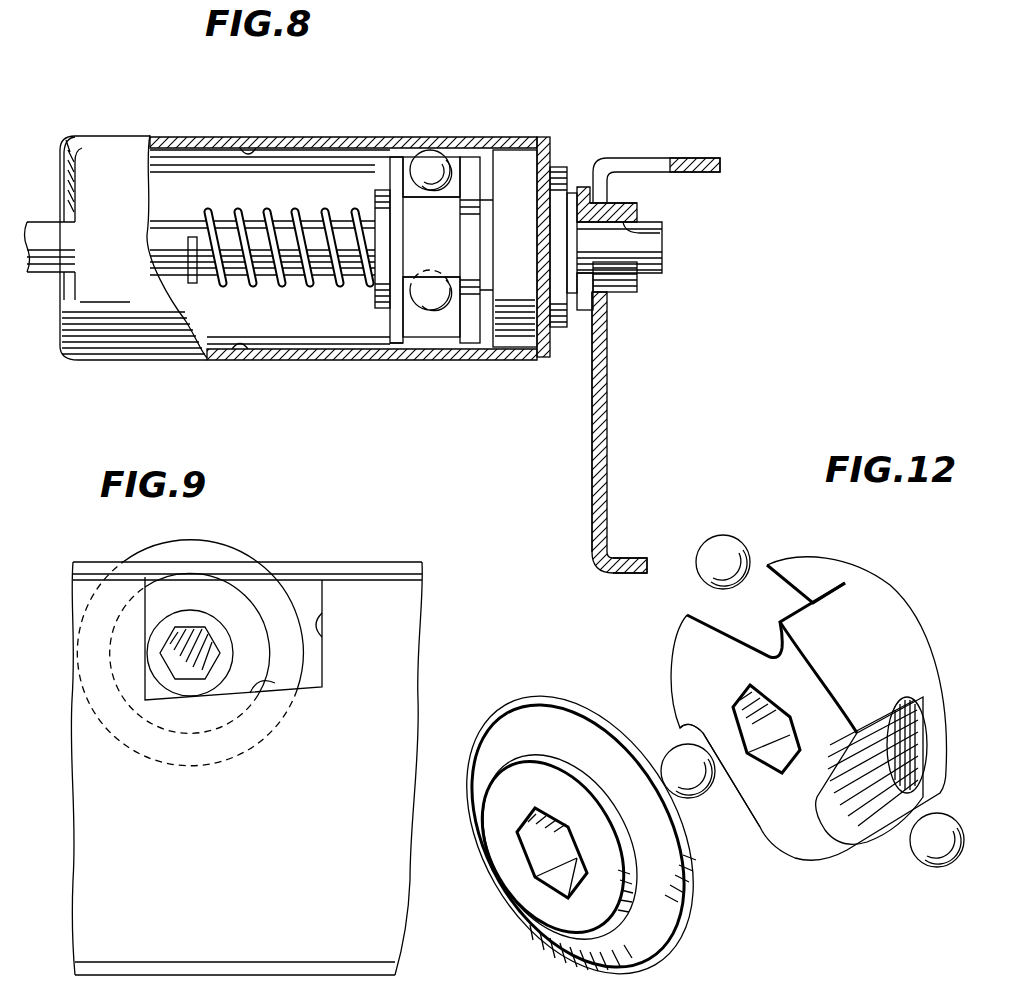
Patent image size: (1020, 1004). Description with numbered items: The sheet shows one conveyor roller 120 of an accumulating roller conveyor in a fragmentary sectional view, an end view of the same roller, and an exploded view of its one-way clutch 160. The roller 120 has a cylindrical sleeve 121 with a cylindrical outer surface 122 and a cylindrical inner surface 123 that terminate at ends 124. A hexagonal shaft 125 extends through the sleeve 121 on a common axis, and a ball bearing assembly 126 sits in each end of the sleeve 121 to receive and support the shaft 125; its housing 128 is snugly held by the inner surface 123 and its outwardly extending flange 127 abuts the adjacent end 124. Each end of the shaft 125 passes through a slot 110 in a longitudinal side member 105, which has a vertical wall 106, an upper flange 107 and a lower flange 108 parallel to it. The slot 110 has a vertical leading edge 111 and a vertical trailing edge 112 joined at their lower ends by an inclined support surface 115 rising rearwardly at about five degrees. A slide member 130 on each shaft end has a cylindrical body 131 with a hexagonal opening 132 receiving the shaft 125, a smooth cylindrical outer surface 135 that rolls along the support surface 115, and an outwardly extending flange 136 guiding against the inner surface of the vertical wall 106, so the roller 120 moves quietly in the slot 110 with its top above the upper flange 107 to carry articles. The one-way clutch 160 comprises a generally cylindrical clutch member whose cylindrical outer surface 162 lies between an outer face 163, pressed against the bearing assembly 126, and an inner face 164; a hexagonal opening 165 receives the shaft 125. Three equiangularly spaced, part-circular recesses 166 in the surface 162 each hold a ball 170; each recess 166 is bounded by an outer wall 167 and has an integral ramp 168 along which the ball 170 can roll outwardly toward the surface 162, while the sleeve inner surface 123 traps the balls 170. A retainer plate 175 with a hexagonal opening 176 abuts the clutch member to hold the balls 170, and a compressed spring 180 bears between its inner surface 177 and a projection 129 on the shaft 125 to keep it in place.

In FIG. 8, the longitudinal side member 105 is at (590, 440).
In FIG. 9, the longitudinal side member 105 is at (408, 620).
In FIG. 8, the vertical wall 106 is at (607, 398).
In FIG. 9, the vertical wall 106 is at (238, 840).
In FIG. 8, the upper flange 107 is at (698, 165).
In FIG. 9, the upper flange 107 is at (355, 562).
In FIG. 8, the lower flange 108 is at (625, 560).
In FIG. 9, the lower flange 108 is at (235, 962).
In FIG. 8, the slot 110 is at (605, 165).
In FIG. 9, the slot 110 is at (300, 592).
In FIG. 9, the leading edge 111 is at (125, 588).
In FIG. 9, the trailing edge 112 is at (318, 628).
In FIG. 9, the inclined support surface 115 is at (268, 690).
In FIG. 8, the conveyor roller 120 is at (222, 133).
In FIG. 9, the conveyor roller 120 is at (185, 540).
In FIG. 8, the cylindrical sleeve 121 is at (300, 142).
In FIG. 8, the cylindrical outer surface 122 is at (370, 140).
In FIG. 8, the cylindrical inner surface 123 is at (250, 150).
In FIG. 8, the end 124 is at (543, 150).
In FIG. 8, the hexagonal shaft 125 is at (42, 222).
In FIG. 9, the hexagonal shaft 125 is at (193, 676).
In FIG. 8, the ball bearing assembly 126 is at (560, 168).
In FIG. 9, the ball bearing assembly 126 is at (240, 590).
In FIG. 8, the outwardly extending flange 127 is at (556, 150).
In FIG. 8, the housing 128 is at (530, 230).
In FIG. 8, the projection 129 is at (185, 262).
In FIG. 8, the slide member 130 is at (618, 205).
In FIG. 9, the slide member 130 is at (218, 640).
In FIG. 8, the cylindrical body 131 is at (640, 212).
In FIG. 8, the hexagonal opening 132 is at (662, 229).
In FIG. 8, the cylindrical outer surface 135 is at (622, 290).
In FIG. 9, the cylindrical outer surface 135 is at (163, 615).
In FIG. 8, the outwardly extending flange 136 is at (592, 308).
In FIG. 8, the one-way clutch 160 is at (420, 330).
In FIG. 12, the cylindrical outer surface 162 is at (880, 625).
In FIG. 8, the outer face 163 is at (480, 168).
In FIG. 12, the inner face 164 is at (688, 656).
In FIG. 12, the hexagonal opening 165 is at (745, 725).
In FIG. 12, the recess 166 is at (790, 626).
In FIG. 8, the outer wall 167 is at (462, 332).
In FIG. 12, the outer wall 167 is at (822, 575).
In FIG. 8, the ramp 168 is at (435, 335).
In FIG. 12, the ramp 168 is at (762, 583).
In FIG. 8, the ball 170 is at (423, 160).
In FIG. 12, the ball 170 is at (724, 538).
In FIG. 8, the retainer plate 175 is at (385, 322).
In FIG. 12, the retainer plate 175 is at (578, 952).
In FIG. 12, the hexagonal opening 176 is at (540, 862).
In FIG. 8, the inner surface 177 is at (375, 197).
In FIG. 12, the inner surface 177 is at (505, 840).
In FIG. 8, the spring 180 is at (282, 282).